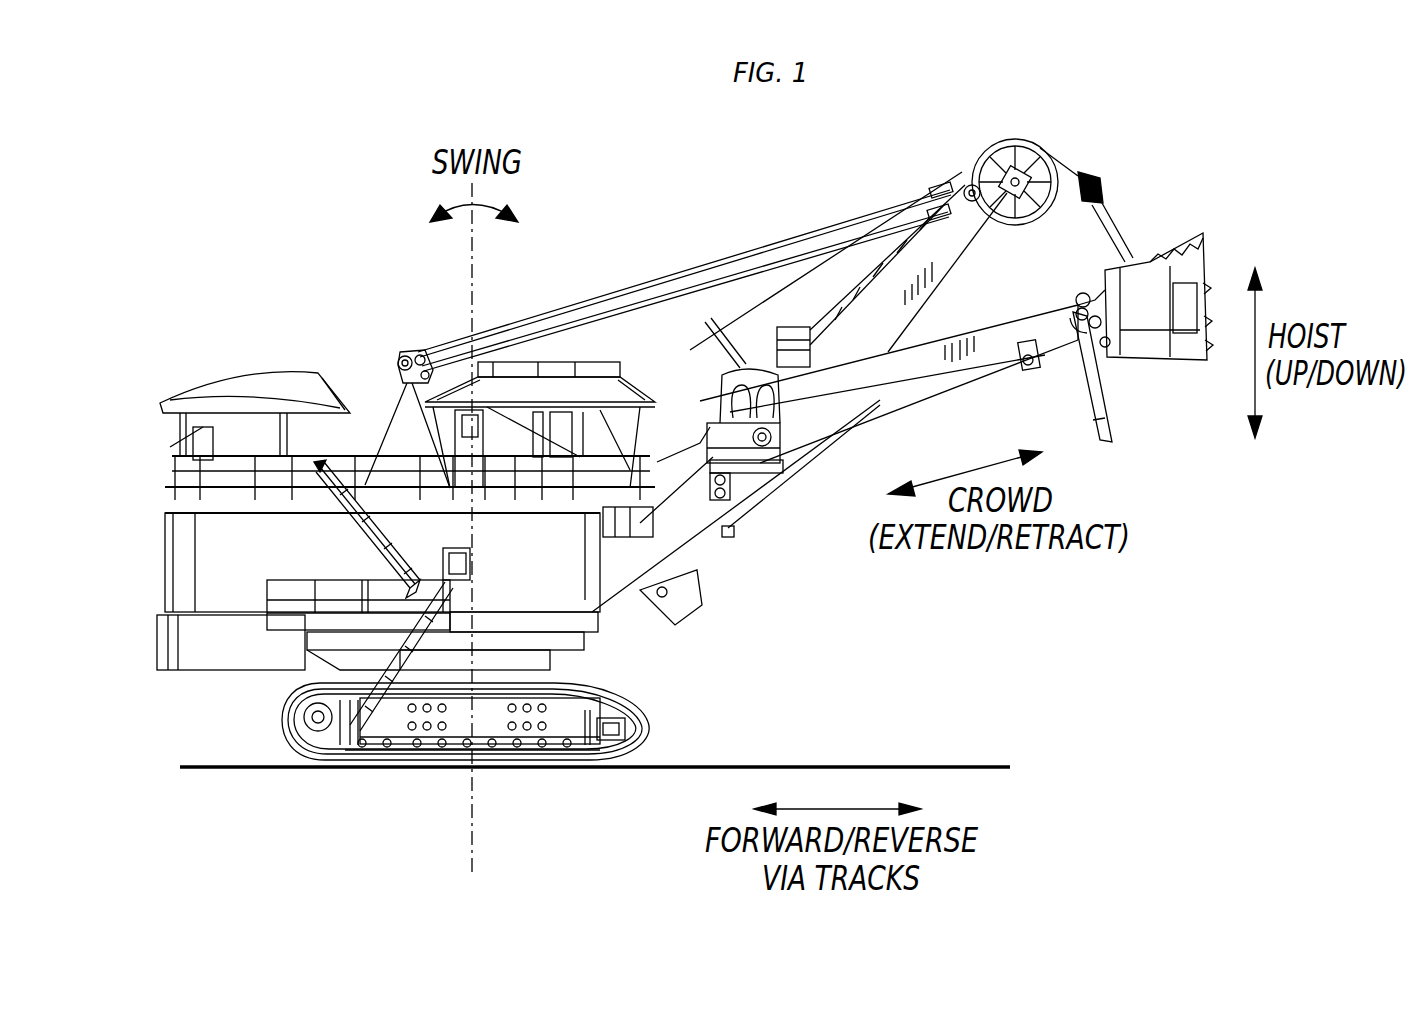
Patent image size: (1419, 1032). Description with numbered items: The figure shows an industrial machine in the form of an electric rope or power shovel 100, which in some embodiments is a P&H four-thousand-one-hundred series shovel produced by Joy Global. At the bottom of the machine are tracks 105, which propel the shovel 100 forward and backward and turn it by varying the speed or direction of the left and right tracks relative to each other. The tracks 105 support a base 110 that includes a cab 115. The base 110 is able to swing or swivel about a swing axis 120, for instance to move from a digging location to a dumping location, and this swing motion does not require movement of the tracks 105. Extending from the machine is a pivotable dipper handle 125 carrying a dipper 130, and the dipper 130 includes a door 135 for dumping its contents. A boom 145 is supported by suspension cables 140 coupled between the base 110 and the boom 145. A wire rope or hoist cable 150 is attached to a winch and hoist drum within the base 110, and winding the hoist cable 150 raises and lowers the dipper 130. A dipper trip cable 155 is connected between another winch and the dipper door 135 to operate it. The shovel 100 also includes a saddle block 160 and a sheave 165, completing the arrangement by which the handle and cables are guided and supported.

The shovel 100 is at (213, 246).
The tracks 105 is at (652, 722).
The base 110 is at (222, 590).
The cab 115 is at (600, 395).
The swing axis 120 is at (470, 805).
The dipper handle 125 is at (953, 335).
The dipper 130 is at (1150, 258).
The door 135 is at (1105, 407).
The suspension cables 140 is at (600, 303).
The boom 145 is at (973, 230).
The hoist cable 150 is at (950, 173).
The dipper trip cable 155 is at (870, 420).
The saddle block 160 is at (730, 370).
The sheave 165 is at (1028, 140).